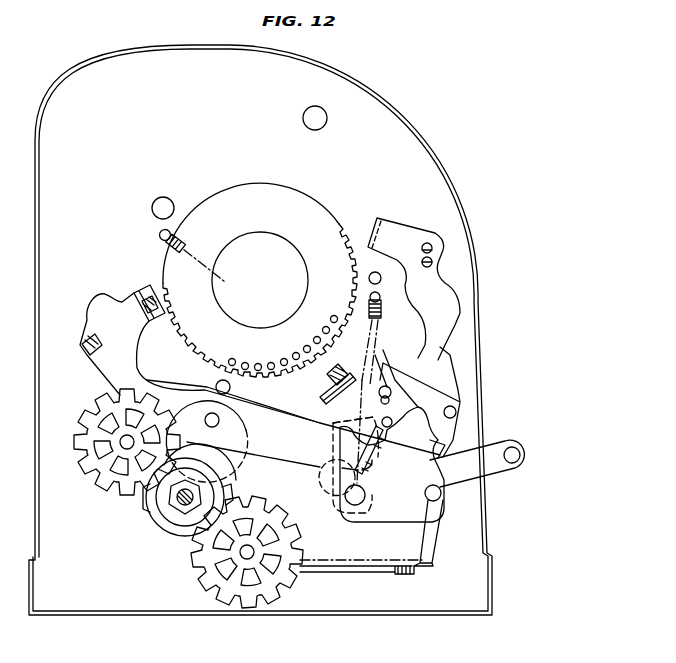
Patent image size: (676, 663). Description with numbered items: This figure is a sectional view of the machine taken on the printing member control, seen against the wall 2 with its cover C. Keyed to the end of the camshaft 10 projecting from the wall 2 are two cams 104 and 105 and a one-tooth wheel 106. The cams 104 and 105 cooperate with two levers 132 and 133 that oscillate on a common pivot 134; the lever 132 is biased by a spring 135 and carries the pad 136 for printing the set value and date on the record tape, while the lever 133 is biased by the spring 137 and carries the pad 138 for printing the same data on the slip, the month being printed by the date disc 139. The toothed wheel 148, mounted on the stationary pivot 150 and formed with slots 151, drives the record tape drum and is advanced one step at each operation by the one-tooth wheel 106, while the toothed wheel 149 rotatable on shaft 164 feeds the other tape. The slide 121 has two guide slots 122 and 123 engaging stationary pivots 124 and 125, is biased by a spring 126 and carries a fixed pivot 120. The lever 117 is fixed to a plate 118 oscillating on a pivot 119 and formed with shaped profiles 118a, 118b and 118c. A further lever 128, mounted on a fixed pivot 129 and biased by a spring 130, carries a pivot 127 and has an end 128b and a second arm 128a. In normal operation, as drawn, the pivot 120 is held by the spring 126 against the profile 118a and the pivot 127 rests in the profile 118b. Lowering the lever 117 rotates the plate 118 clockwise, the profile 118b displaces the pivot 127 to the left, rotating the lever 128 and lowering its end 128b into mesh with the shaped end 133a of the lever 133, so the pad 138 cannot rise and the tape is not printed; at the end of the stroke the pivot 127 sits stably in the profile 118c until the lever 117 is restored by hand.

The wall 2 is at (411, 132).
The cover C is at (437, 158).
The camshaft 10 is at (185, 505).
The cam 104 is at (230, 486).
The cam 105 is at (150, 500).
The one-tooth wheel 106 is at (172, 515).
The lever 117 is at (495, 470).
The plate 118 is at (393, 522).
The shaped profile 118a is at (394, 442).
The shaped profile 118b is at (430, 478).
The shaped profile 118c is at (440, 457).
The pivot 119 is at (357, 506).
The fixed pivot 120 is at (393, 421).
The slide 121 is at (462, 314).
The guide slot 122 is at (462, 262).
The guide slot 123 is at (392, 392).
The stationary pivot 124 is at (431, 245).
The stationary pivot 125 is at (397, 362).
The spring 126 is at (345, 475).
The pivot 127 is at (442, 500).
The lever 128 is at (432, 545).
The link arm 128a is at (430, 398).
The end of lever 128b is at (362, 362).
The fixed pivot 129 is at (457, 410).
The spring 130 is at (370, 568).
The lever 132 is at (128, 358).
The lever 133 is at (288, 428).
The shaped end 133a is at (360, 392).
The common pivot 134 is at (218, 418).
The spring 135 is at (147, 255).
The printing pad 136 is at (156, 300).
The spring 137 is at (376, 333).
The printing pad 138 is at (326, 372).
The printing disc 139 is at (300, 200).
The toothed wheel 148 is at (245, 362).
The toothed wheel 149 is at (208, 574).
The stationary pivot 150 is at (120, 442).
The slot 151 is at (105, 418).
The shaft 164 is at (255, 550).